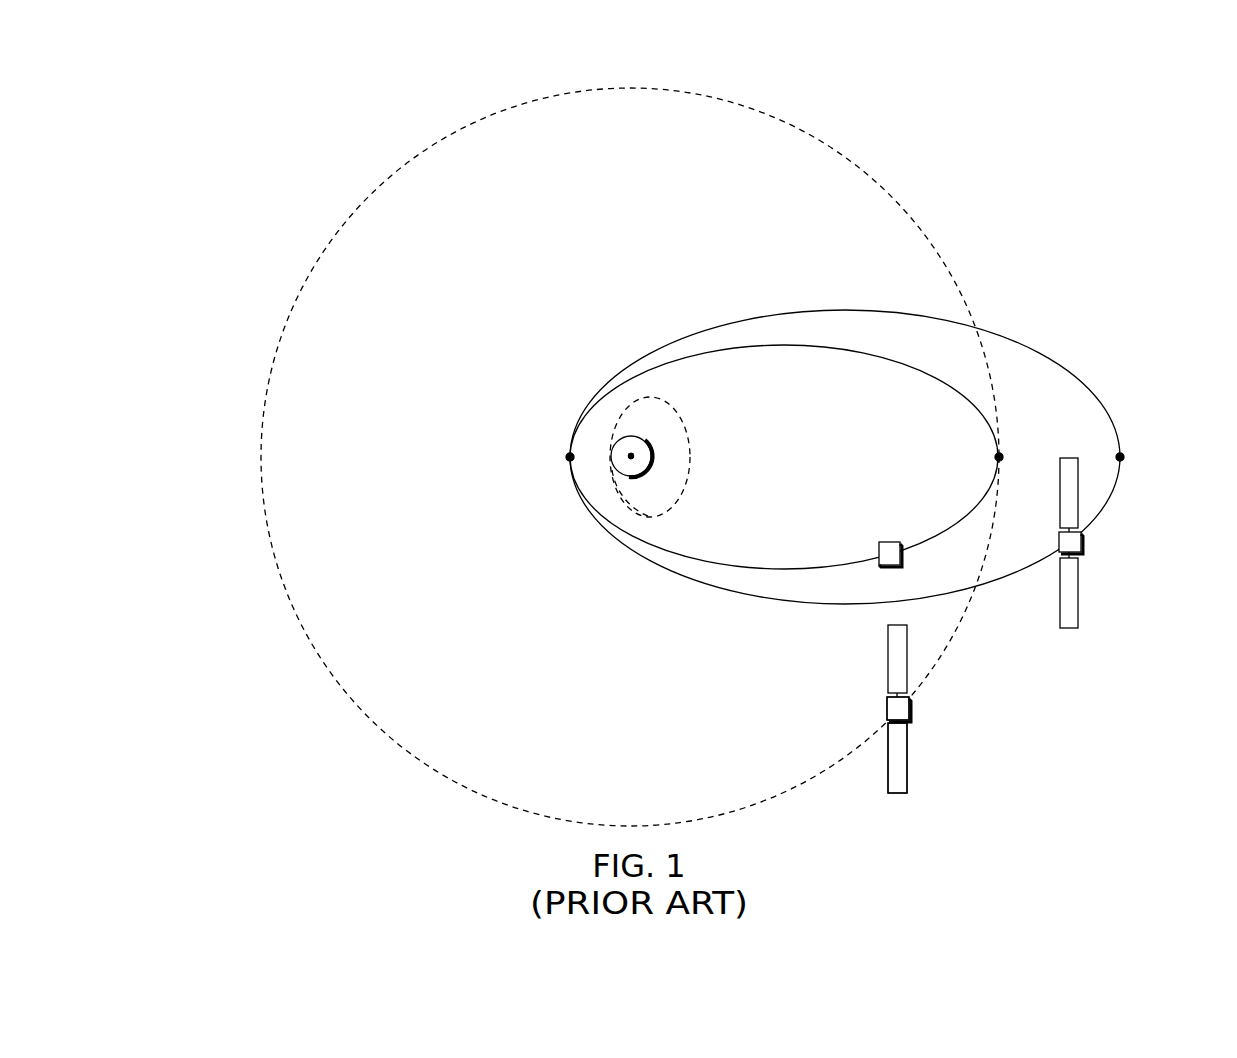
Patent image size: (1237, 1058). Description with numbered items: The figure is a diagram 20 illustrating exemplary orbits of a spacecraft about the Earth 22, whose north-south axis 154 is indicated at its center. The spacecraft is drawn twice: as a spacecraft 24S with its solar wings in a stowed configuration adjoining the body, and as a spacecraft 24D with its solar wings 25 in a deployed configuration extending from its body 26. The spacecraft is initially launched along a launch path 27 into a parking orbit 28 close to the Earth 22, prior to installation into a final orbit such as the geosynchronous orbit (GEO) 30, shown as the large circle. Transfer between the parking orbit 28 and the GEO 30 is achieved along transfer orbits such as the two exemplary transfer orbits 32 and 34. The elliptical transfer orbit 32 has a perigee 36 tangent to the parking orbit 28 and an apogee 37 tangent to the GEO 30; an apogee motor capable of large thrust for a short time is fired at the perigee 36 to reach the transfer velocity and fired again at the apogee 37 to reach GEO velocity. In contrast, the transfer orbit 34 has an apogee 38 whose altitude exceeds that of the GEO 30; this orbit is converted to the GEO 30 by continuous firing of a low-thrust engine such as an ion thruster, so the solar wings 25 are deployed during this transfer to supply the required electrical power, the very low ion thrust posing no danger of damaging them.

The diagram 20 is at (948, 199).
The Earth 22 is at (652, 455).
The spacecraft with stowed solar wings 24S is at (871, 531).
The spacecraft with deployed solar wings 24D is at (1052, 524).
The solar wings 25 is at (908, 755).
The body 26 is at (911, 703).
The launch path 27 is at (637, 490).
The parking orbit 28 is at (654, 457).
The geosynchronous orbit (GEO) 30 is at (630, 457).
The elliptical transfer orbit 32 is at (784, 455).
The transfer orbit 34 is at (845, 451).
The perigee 36 is at (567, 458).
The apogee 37 is at (1004, 456).
The apogee 38 is at (1125, 456).
The north-south axis 154 is at (631, 447).